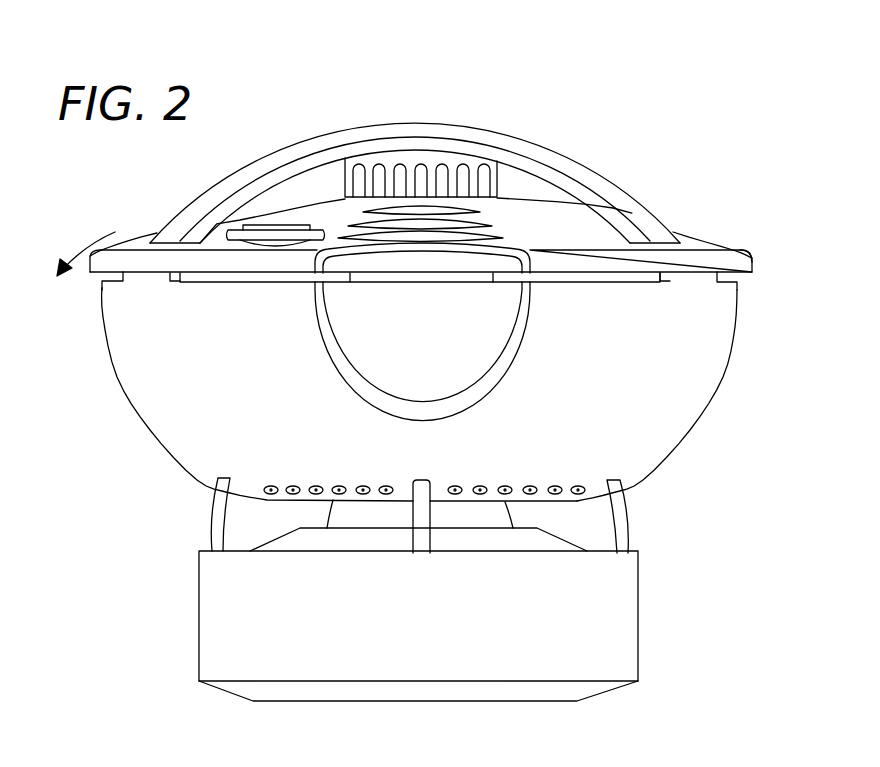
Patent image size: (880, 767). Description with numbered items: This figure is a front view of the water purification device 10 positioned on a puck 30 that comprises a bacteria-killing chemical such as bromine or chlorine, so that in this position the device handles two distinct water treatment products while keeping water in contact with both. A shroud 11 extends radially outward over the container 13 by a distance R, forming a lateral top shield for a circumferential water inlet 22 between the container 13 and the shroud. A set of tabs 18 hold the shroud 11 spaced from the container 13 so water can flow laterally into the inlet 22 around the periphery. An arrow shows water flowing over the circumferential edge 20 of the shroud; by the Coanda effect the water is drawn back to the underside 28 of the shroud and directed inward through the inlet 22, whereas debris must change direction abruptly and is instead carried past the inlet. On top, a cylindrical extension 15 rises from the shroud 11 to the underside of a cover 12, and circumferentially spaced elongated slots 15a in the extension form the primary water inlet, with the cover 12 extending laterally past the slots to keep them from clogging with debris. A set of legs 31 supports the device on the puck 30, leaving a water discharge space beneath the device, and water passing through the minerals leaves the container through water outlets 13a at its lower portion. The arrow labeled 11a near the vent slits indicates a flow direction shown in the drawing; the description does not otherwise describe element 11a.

The water purification device 10 is at (618, 139).
The shroud 11 is at (695, 243).
The vent slits in lid 11a is at (493, 210).
The cover 12 is at (492, 133).
The container 13 is at (675, 392).
The water outlets 13a is at (556, 486).
The cylindrical extension 15 is at (412, 143).
The elongated slots 15a is at (400, 168).
The tabs 18 is at (150, 278).
The circumferential edge 20 is at (754, 267).
The circumferential water inlet 22 is at (500, 315).
The underside side of shroud 28 is at (98, 276).
The puck 30 is at (613, 603).
The legs 31 is at (218, 520).
The radial extension distance R is at (697, 297).